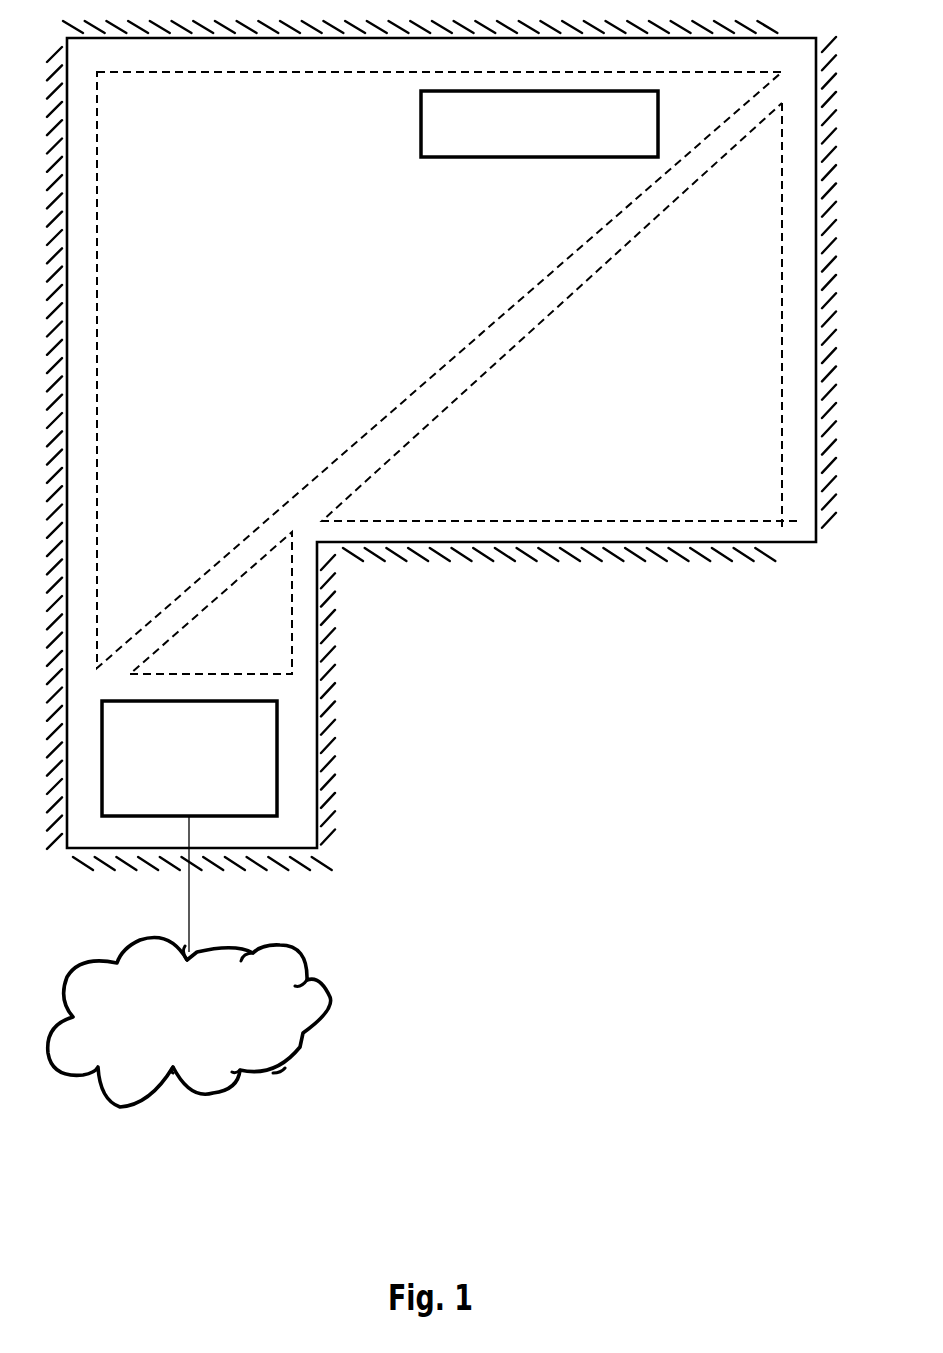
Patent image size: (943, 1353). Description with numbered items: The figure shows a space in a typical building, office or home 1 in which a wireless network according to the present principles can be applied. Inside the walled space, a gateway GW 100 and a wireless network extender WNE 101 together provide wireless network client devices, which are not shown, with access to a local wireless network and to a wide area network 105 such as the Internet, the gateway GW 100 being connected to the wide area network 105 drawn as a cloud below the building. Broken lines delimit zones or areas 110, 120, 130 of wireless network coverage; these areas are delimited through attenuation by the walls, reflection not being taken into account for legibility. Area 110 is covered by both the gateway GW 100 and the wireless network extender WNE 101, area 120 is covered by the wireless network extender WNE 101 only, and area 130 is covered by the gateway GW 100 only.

The building, office or home 1 is at (589, 623).
The gateway 100 is at (237, 773).
The wireless network extender 101 is at (595, 138).
The wide area network 105 is at (213, 1036).
The area of wireless network coverage 110 is at (277, 272).
The area of wireless network coverage 120 is at (652, 387).
The area of wireless network coverage 130 is at (255, 622).